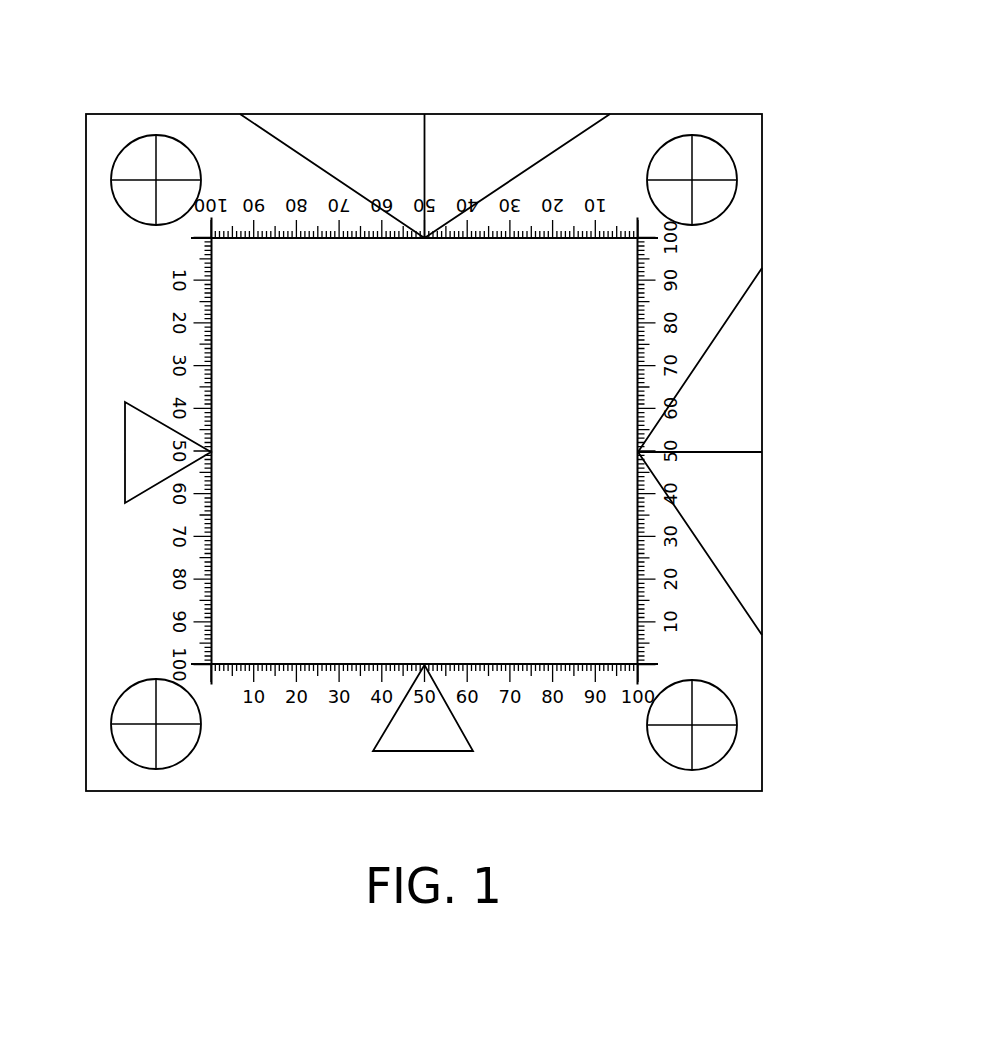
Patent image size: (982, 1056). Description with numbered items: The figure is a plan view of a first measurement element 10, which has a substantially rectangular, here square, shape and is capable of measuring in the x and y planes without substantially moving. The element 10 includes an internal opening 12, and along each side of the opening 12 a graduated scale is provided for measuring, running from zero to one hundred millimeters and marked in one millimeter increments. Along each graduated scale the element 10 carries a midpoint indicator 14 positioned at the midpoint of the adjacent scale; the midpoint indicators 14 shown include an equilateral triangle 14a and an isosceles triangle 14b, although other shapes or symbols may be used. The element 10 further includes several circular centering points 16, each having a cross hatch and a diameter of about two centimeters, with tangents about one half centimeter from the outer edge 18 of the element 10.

The first measurement element 10 is at (422, 73).
The internal opening 12 is at (419, 460).
The midpoint indicator 14 is at (135, 445).
The equilateral triangle 14a is at (423, 737).
The isosceles triangle 14b is at (730, 408).
The centering point 16 is at (717, 170).
The outer edge 18 is at (638, 114).